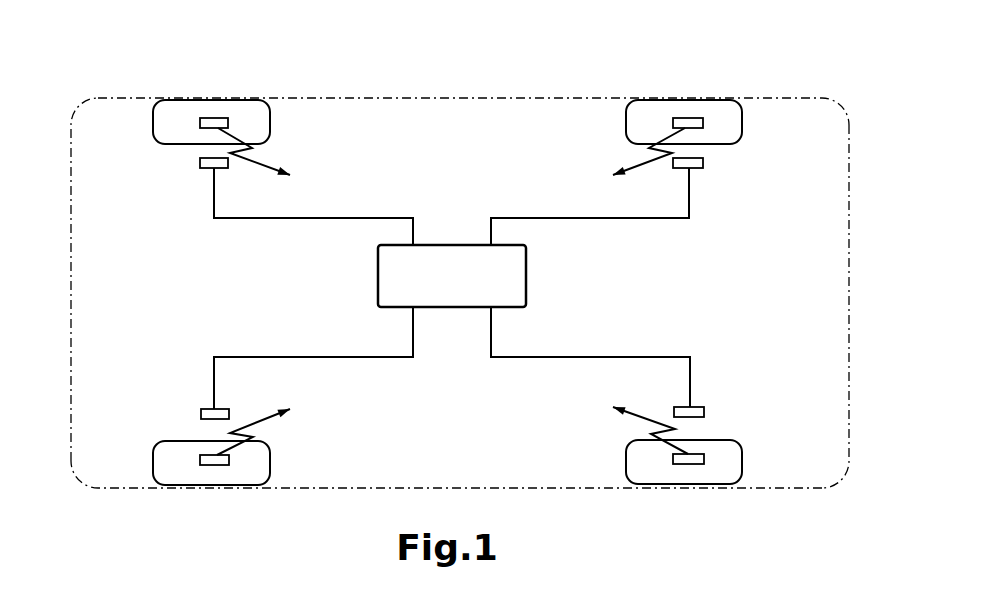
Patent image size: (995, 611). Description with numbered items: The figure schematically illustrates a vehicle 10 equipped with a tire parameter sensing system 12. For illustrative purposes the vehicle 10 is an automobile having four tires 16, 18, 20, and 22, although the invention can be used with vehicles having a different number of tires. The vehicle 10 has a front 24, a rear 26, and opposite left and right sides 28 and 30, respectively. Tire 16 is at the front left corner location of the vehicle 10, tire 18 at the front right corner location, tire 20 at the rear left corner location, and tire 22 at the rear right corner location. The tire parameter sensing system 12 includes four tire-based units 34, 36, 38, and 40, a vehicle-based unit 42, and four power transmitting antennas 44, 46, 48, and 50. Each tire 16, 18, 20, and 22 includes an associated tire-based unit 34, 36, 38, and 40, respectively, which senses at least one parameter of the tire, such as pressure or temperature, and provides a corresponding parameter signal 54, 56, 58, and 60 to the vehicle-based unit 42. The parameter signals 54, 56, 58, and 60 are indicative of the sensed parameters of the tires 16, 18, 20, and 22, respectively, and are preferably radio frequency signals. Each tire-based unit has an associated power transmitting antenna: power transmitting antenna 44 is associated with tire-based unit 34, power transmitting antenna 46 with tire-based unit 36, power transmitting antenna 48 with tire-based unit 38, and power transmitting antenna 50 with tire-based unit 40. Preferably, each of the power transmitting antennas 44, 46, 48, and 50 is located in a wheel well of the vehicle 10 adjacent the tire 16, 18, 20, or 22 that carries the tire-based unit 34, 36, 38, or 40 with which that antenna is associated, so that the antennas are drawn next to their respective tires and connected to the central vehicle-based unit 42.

The vehicle 10 is at (375, 133).
The tire parameter sensing system 12 is at (520, 78).
The tire 16 is at (183, 467).
The tire 18 is at (173, 110).
The tire 20 is at (725, 473).
The tire 22 is at (723, 105).
The front 24 is at (70, 313).
The rear 26 is at (850, 265).
The left side 28 is at (400, 488).
The right side 30 is at (443, 97).
The tire-based unit 34 is at (218, 467).
The tire-based unit 36 is at (220, 122).
The tire-based unit 38 is at (688, 465).
The tire-based unit 40 is at (687, 122).
The vehicle-based unit 42 is at (526, 273).
The power transmitting antenna 44 is at (205, 412).
The power transmitting antenna 46 is at (206, 163).
The power transmitting antenna 48 is at (705, 412).
The power transmitting antenna 50 is at (703, 162).
The parameter signal 54 is at (263, 423).
The parameter signal 56 is at (263, 170).
The parameter signal 58 is at (643, 420).
The parameter signal 60 is at (650, 157).